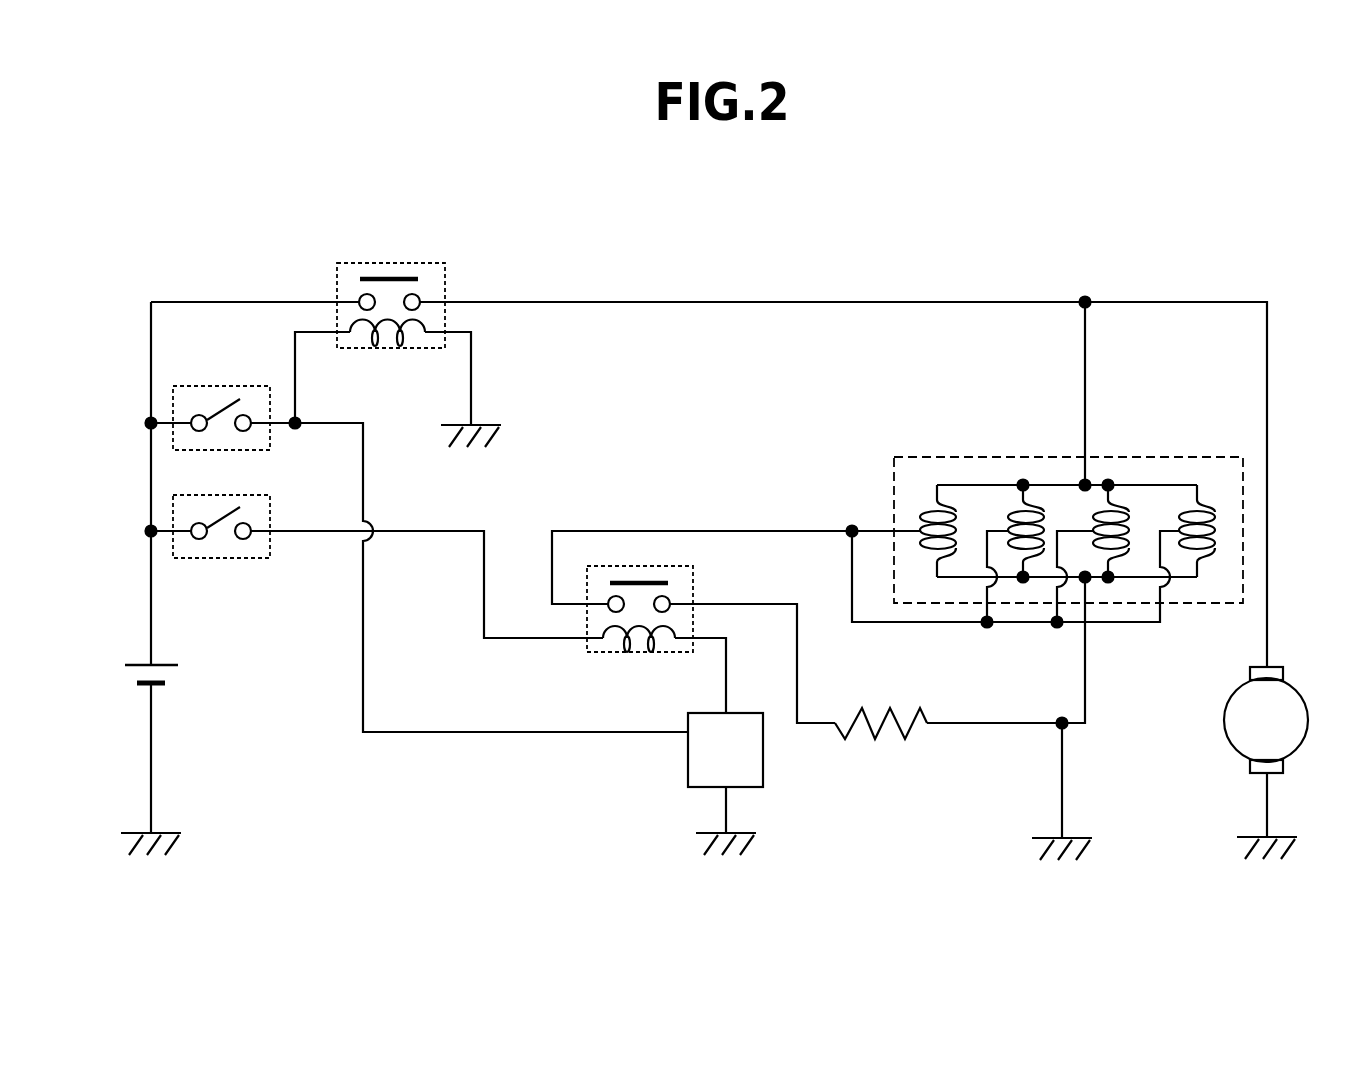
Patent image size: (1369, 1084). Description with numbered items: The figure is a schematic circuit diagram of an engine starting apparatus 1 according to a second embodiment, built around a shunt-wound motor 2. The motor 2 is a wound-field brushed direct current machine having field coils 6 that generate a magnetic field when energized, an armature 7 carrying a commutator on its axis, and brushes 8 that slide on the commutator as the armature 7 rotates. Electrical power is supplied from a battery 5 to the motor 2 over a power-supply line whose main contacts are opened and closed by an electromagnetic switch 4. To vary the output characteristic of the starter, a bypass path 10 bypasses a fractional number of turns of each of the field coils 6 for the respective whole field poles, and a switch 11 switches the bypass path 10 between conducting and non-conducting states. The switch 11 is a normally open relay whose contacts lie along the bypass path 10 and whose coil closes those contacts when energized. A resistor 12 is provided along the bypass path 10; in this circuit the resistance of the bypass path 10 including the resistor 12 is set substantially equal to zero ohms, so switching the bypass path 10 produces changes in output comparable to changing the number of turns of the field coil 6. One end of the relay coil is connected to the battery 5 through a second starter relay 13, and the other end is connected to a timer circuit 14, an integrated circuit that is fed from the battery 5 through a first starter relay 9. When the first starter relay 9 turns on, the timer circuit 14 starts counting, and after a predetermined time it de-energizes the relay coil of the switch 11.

The engine starting apparatus 1 is at (884, 241).
The motor 2 is at (1338, 545).
The electromagnetic switch 4 is at (420, 256).
The battery 5 is at (132, 678).
The field coils 6 is at (1243, 582).
The armature 7 is at (1302, 718).
The brushes 8 is at (1283, 673).
The first starter relay 9 is at (238, 407).
The bypass path 10 is at (618, 530).
The switch 11 is at (695, 583).
The resistor 12 is at (902, 730).
The second starter relay 13 is at (240, 514).
The timer circuit 14 is at (688, 765).